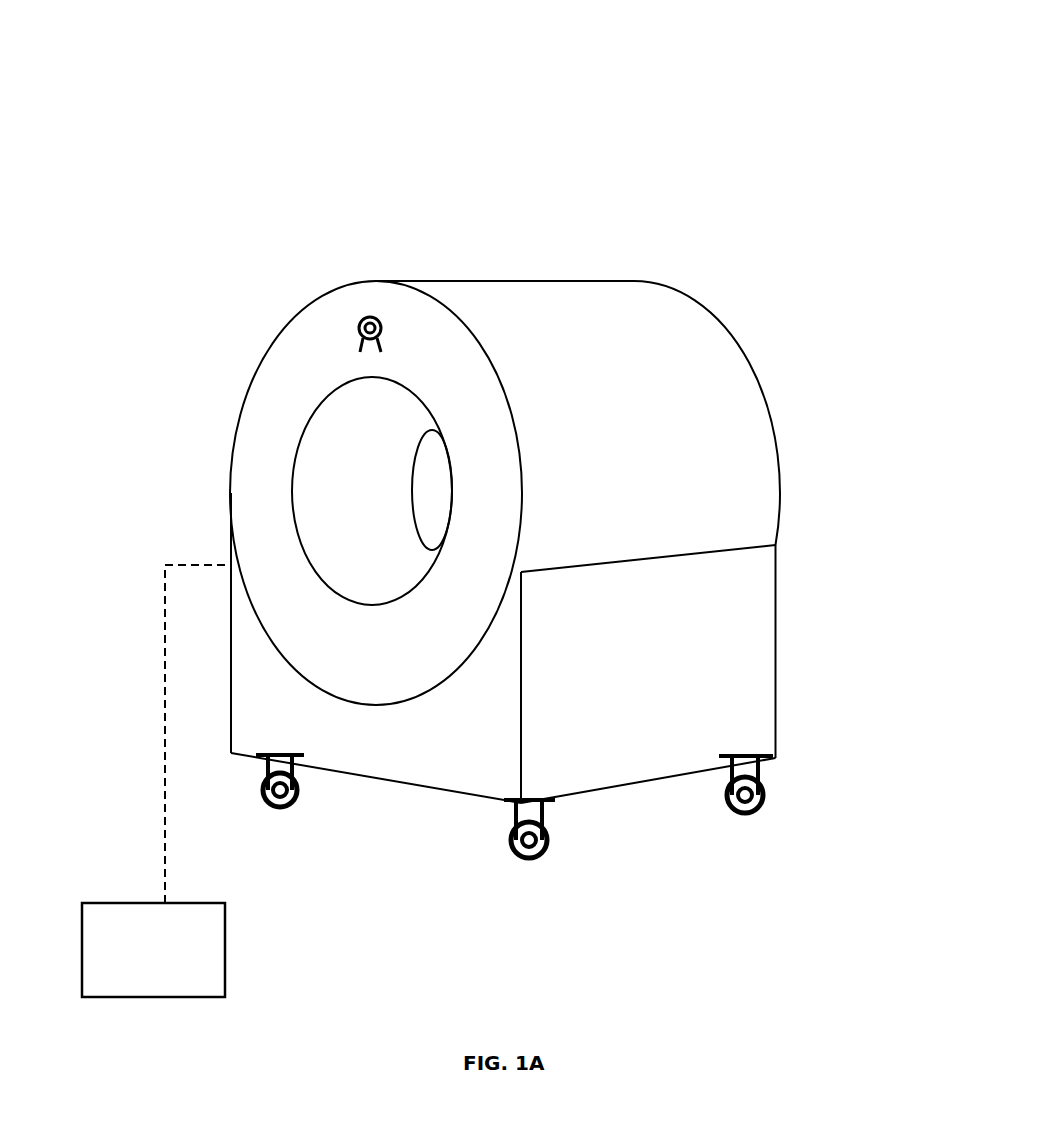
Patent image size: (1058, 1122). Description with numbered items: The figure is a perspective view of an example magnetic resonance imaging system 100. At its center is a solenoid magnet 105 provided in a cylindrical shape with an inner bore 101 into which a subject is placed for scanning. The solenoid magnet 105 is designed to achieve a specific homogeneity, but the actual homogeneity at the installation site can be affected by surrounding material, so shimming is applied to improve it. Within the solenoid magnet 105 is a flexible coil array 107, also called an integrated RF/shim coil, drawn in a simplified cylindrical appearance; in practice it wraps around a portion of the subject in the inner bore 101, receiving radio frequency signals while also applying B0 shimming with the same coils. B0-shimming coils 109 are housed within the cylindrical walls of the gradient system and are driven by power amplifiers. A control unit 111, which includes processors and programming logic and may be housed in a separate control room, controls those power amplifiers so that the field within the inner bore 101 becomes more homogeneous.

The magnetic resonance imaging (MRI) system 100 is at (858, 79).
The inner bore 101 is at (322, 500).
The solenoid magnet 105 is at (282, 443).
The flexible coil array 107 is at (393, 463).
The B0-shimming coils 109 is at (255, 543).
The control unit 111 is at (122, 902).